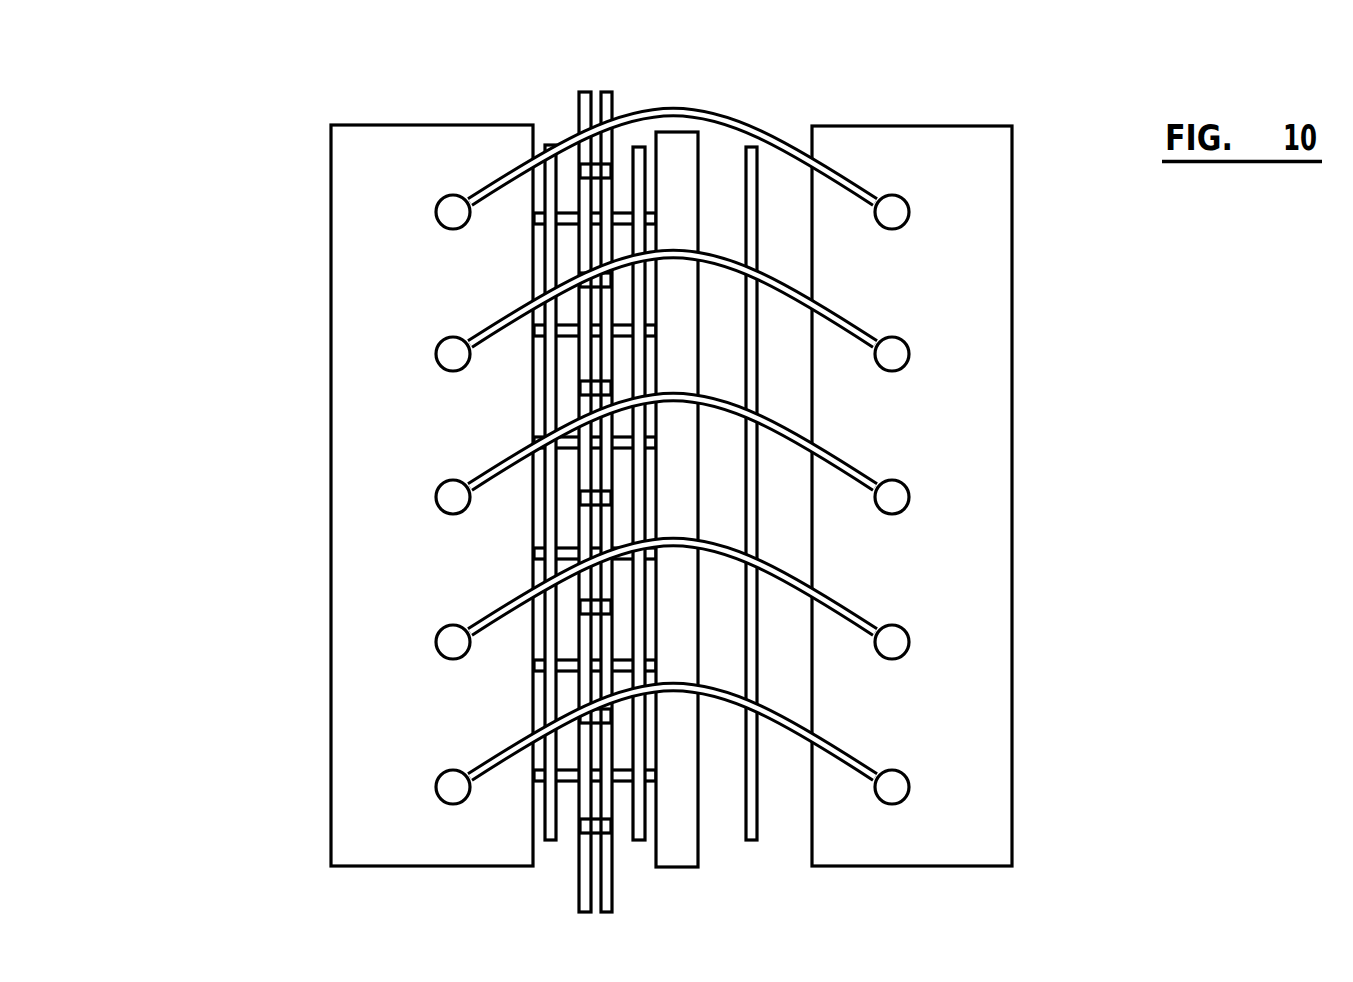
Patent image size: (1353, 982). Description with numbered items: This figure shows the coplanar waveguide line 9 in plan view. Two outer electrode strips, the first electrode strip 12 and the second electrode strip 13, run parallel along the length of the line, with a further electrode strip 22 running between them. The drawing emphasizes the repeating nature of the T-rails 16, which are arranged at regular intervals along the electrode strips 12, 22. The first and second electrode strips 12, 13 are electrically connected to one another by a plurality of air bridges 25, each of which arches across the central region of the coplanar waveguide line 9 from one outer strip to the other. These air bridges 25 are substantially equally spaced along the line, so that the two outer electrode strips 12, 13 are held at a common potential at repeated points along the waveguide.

The coplanar waveguide line 9 is at (222, 137).
The first electrode strip 12 is at (382, 825).
The second electrode strip 13 is at (948, 729).
The T-rail 16 is at (535, 220).
The electrode strip 22 is at (677, 820).
The air bridge 25 is at (723, 120).